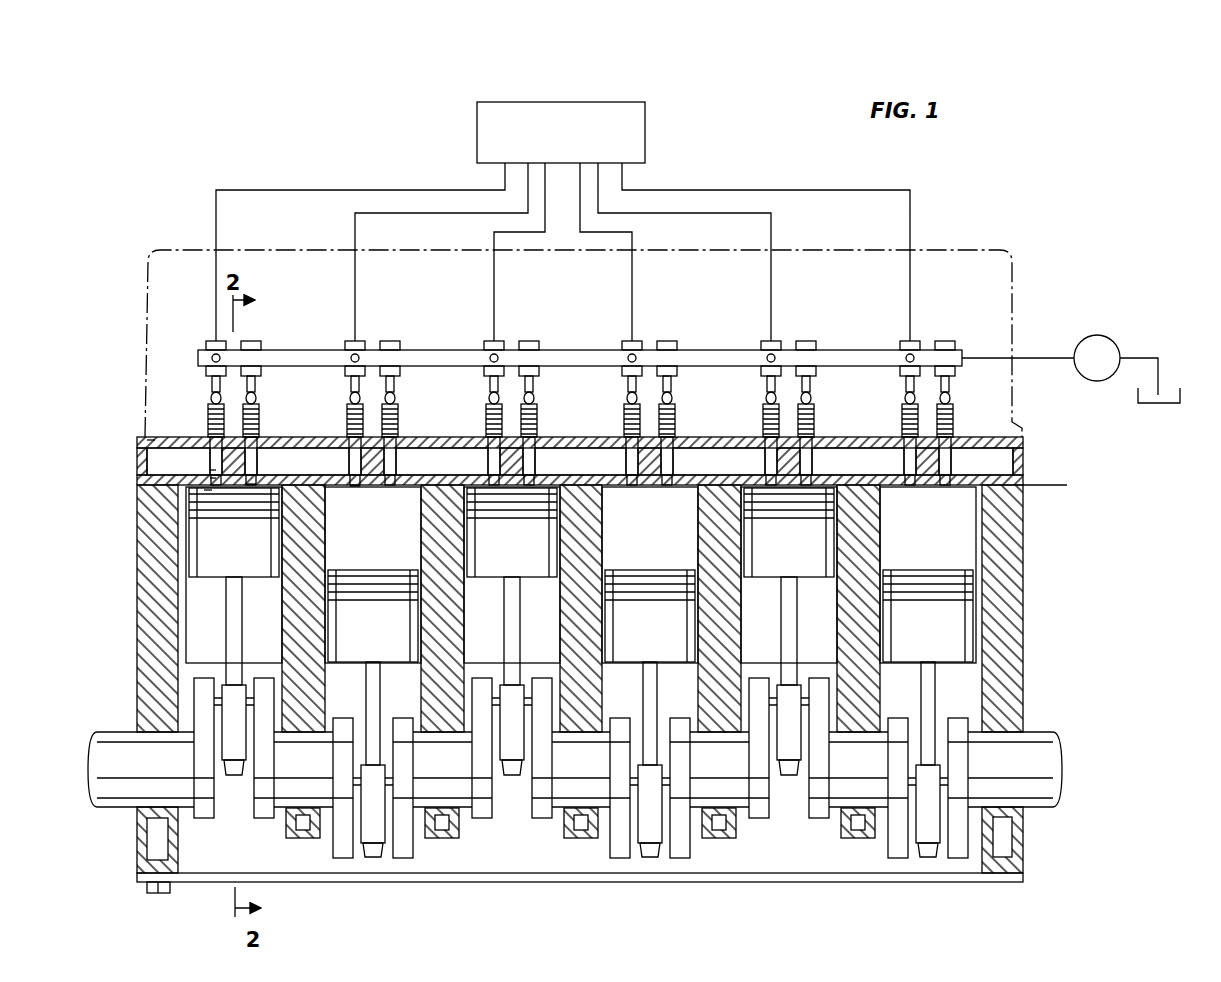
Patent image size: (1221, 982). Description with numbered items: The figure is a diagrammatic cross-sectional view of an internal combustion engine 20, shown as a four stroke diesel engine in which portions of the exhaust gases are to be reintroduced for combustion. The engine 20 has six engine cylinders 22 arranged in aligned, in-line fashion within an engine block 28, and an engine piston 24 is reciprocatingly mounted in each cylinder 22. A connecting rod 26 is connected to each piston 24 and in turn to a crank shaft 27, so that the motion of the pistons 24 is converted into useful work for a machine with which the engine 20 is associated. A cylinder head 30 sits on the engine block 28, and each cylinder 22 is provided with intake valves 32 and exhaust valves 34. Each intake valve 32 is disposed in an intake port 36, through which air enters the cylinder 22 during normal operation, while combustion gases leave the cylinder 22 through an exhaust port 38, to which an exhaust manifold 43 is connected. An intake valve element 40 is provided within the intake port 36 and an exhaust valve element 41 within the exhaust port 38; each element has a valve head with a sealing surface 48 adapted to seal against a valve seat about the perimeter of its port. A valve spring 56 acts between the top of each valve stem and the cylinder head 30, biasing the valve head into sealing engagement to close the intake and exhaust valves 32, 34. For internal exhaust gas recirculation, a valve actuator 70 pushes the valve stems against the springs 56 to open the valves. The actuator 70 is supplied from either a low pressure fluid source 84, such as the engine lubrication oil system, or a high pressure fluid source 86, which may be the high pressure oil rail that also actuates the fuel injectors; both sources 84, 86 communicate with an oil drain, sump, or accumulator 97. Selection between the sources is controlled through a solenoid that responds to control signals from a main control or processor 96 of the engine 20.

The engine 20 is at (1048, 247).
The engine cylinder 22 is at (250, 631).
The engine piston 24 is at (205, 567).
The connecting rod 26 is at (224, 640).
The crank shaft 27 is at (122, 787).
The engine block 28 is at (150, 497).
The cylinder head 30 is at (1023, 464).
The intake valve 32 is at (254, 437).
The exhaust valve 34 is at (205, 447).
The intake port 36 is at (251, 486).
The exhaust port 38 is at (213, 478).
The intake valve element 40 is at (208, 492).
The exhaust valve element 41 is at (355, 487).
The exhaust manifold 43 is at (150, 440).
The sealing surface 48 is at (214, 470).
The valve spring 56 is at (212, 400).
The valve actuator 70 is at (212, 341).
The low pressure fluid source 84 is at (1100, 337).
The high pressure fluid source 86 is at (873, 350).
The main control or processor 96 is at (477, 127).
The oil drain, sump, or accumulator 97 is at (1182, 393).